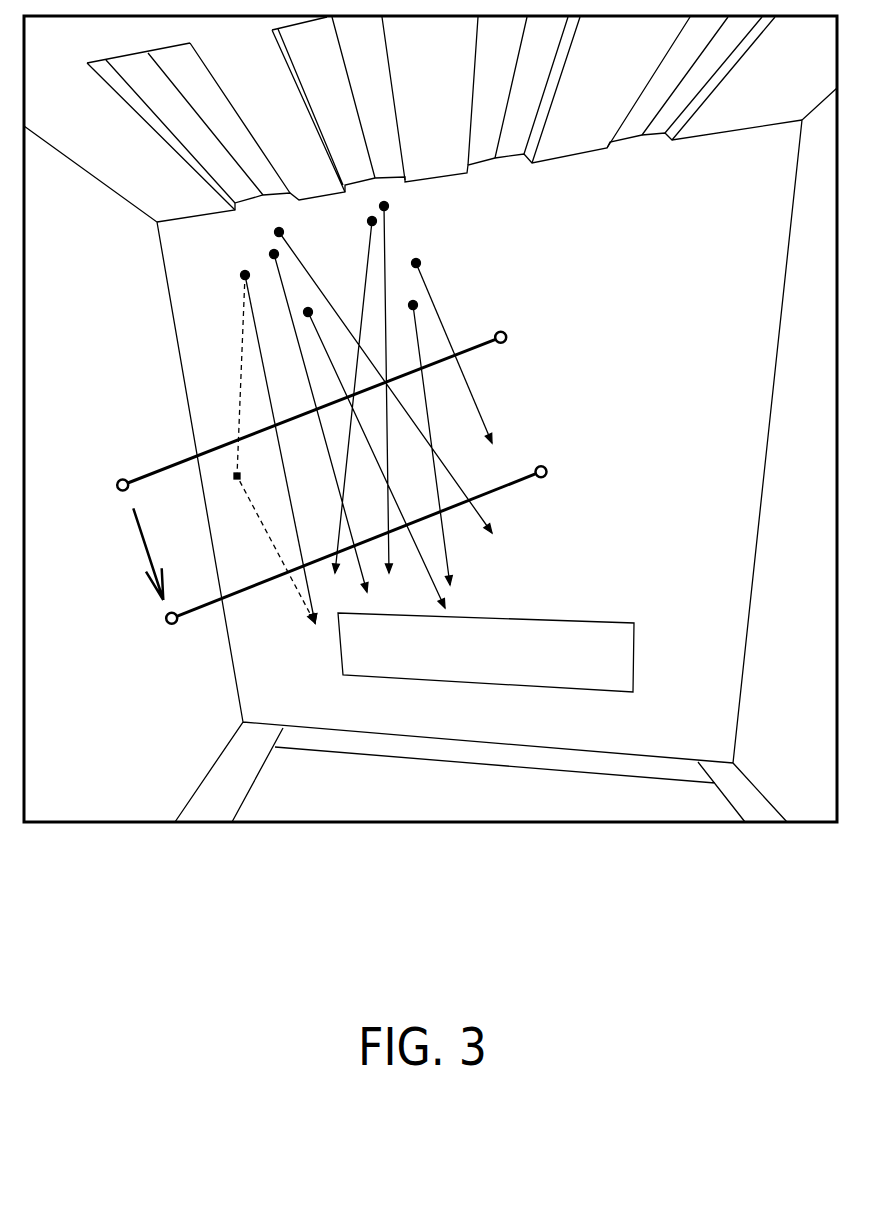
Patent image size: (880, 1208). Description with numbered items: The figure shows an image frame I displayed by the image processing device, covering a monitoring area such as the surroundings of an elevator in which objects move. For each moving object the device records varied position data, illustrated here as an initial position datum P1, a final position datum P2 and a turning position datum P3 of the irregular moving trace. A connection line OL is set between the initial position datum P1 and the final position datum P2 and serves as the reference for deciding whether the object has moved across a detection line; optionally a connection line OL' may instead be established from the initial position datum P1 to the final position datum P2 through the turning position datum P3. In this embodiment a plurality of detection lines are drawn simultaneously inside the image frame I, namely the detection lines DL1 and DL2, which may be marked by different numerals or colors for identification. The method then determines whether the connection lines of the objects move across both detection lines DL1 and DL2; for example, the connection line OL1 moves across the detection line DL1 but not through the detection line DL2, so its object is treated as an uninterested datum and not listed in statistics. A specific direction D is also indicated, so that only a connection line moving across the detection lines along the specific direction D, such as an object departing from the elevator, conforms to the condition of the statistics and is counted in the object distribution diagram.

The image frame I is at (430, 448).
The initial position datum P1 is at (232, 277).
The final position datum P2 is at (312, 639).
The turning position datum P3 is at (221, 480).
The detection line DL1 is at (339, 405).
The detection line DL2 is at (387, 537).
The connection line OL is at (282, 449).
The connection line OL' is at (270, 449).
The connection line OL1 is at (470, 353).
The specific direction D is at (140, 554).